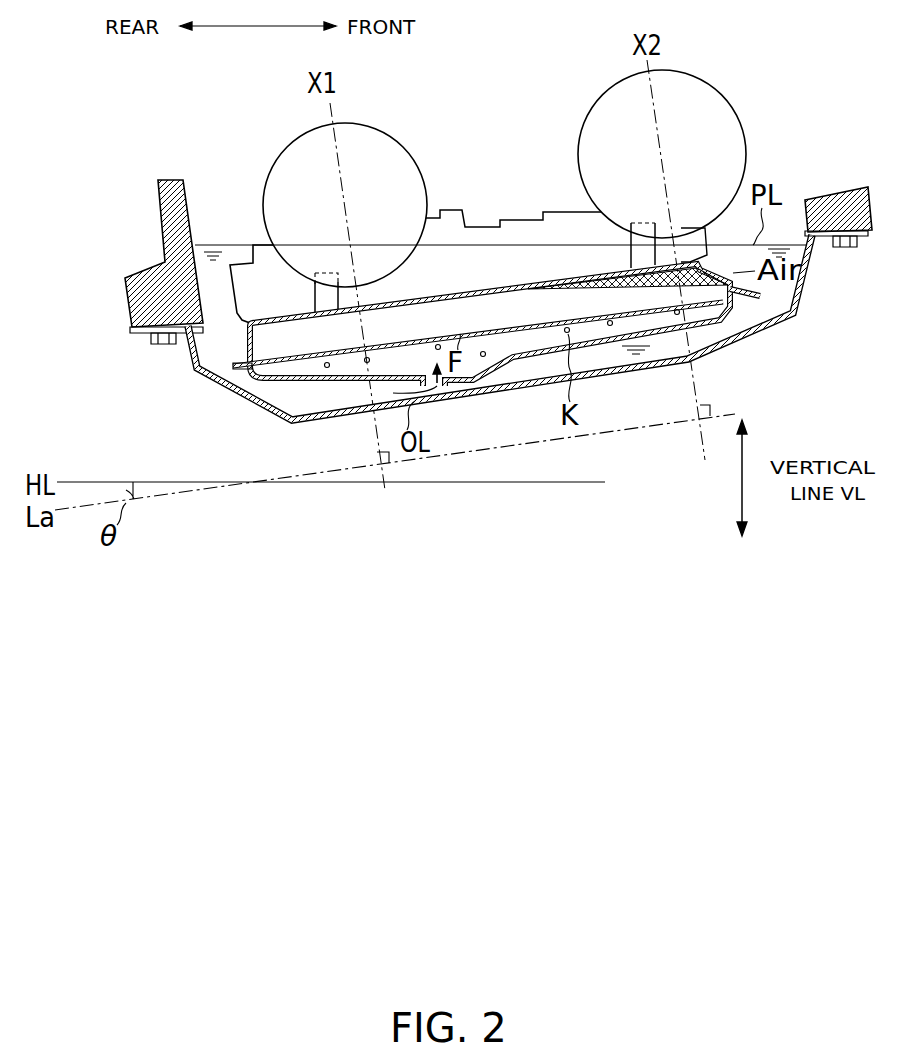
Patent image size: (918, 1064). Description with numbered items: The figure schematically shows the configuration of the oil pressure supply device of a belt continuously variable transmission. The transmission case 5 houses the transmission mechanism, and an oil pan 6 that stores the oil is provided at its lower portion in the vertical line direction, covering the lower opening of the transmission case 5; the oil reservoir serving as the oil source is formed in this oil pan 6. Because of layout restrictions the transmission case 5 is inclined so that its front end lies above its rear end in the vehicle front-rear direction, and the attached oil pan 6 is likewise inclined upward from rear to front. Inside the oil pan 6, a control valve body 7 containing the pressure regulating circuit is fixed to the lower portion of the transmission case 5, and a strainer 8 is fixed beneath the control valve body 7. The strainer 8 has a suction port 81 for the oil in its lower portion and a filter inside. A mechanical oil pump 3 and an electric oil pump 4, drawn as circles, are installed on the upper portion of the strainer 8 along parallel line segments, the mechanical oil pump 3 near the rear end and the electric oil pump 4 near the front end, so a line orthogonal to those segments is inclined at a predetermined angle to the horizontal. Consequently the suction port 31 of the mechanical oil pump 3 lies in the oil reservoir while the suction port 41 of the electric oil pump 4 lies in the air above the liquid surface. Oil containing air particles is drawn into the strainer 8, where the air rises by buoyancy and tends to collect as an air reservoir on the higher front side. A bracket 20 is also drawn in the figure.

The mechanical oil pump 3 is at (266, 186).
The electric oil pump 4 is at (700, 84).
The transmission case 5 is at (125, 291).
The oil pan 6 is at (208, 384).
The control valve body 7 is at (507, 219).
The strainer 8 is at (260, 385).
The bracket 20 is at (212, 300).
The suction port 31 is at (316, 289).
The suction port 41 is at (631, 233).
The suction port 81 is at (457, 384).